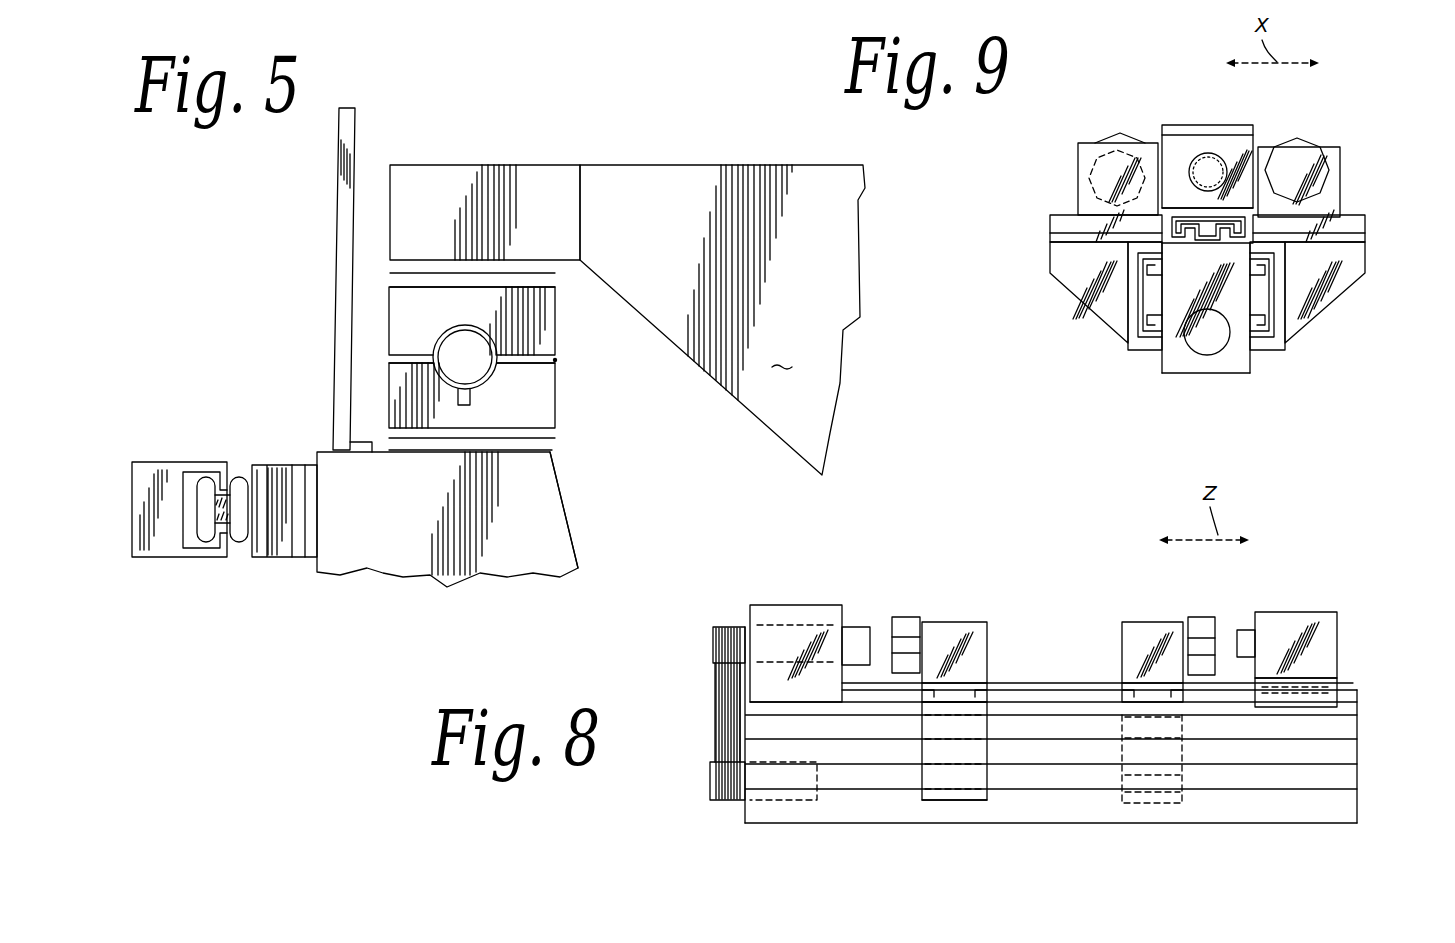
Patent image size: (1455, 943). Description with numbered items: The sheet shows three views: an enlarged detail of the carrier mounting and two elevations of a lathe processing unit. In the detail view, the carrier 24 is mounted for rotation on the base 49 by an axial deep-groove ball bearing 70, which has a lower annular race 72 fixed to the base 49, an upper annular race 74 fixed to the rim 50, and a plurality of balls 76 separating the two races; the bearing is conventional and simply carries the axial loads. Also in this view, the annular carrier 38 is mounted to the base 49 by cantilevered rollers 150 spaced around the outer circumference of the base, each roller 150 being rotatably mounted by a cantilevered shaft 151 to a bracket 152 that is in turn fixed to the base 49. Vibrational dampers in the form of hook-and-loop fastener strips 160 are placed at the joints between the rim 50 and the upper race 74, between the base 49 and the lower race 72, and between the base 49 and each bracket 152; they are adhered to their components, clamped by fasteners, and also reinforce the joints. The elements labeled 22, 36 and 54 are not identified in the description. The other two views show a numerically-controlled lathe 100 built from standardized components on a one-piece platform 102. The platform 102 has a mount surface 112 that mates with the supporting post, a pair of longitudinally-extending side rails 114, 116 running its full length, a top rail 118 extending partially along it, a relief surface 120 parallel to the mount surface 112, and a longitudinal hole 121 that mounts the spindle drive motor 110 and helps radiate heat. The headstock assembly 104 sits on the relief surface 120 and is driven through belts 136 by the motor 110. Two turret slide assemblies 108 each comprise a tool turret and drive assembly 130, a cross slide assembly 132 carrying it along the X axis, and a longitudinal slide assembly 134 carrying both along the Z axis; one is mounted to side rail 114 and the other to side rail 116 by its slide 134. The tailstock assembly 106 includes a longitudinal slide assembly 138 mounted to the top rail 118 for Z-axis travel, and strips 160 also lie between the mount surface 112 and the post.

In FIG. 5, the base frame 22 is at (575, 548).
In FIG. 5, the carrier 24 is at (738, 165).
In FIG. 5, the arm 36 is at (340, 258).
In FIG. 5, the annular carrier 38 is at (160, 556).
In FIG. 5, the base 49 is at (545, 485).
In FIG. 5, the rim 50 is at (517, 190).
In FIG. 5, the surface 54 is at (785, 355).
In FIG. 5, the deep-groove ball bearing 70 is at (557, 361).
In FIG. 5, the lower annular race 72 is at (540, 405).
In FIG. 5, the upper annular race 74 is at (545, 318).
In FIG. 5, the balls 76 is at (455, 352).
In FIG. 9, the numerically-controlled lathe 100 is at (1326, 91).
In FIG. 8, the numerically-controlled lathe 100 is at (1052, 546).
In FIG. 9, the platform 102 is at (1165, 378).
In FIG. 8, the platform 102 is at (1052, 818).
In FIG. 9, the headstock assembly 104 is at (1217, 127).
In FIG. 8, the headstock assembly 104 is at (795, 604).
In FIG. 9, the tailstock assembly 106 is at (1193, 128).
In FIG. 8, the tailstock assembly 106 is at (1290, 610).
In FIG. 8, the turret slide assembly 108 is at (955, 620).
In FIG. 8, the spindle drive motor 110 is at (712, 786).
In FIG. 9, the mount surface 112 is at (1245, 376).
In FIG. 8, the mount surface 112 is at (1233, 826).
In FIG. 9, the side rail 114 is at (1283, 345).
In FIG. 9, the side rail 116 is at (1135, 330).
In FIG. 8, the side rail 116 is at (1365, 738).
In FIG. 9, the top rail 118 is at (1242, 215).
In FIG. 8, the top rail 118 is at (1045, 689).
In FIG. 8, the relief surface 120 is at (780, 700).
In FIG. 9, the hole 121 is at (1207, 355).
In FIG. 9, the tool turret and drive assembly 130 is at (1098, 142).
In FIG. 8, the tool turret and drive assembly 130 is at (905, 624).
In FIG. 9, the cross slide assembly 132 is at (1050, 218).
In FIG. 8, the cross slide assembly 132 is at (975, 682).
In FIG. 9, the longitudinal slide assembly 134 is at (1068, 290).
In FIG. 8, the longitudinal slide assembly 134 is at (987, 802).
In FIG. 8, the belts 136 is at (713, 712).
In FIG. 9, the longitudinal slide assembly 138 is at (1158, 183).
In FIG. 8, the longitudinal slide assembly 138 is at (1323, 673).
In FIG. 5, the cantilevered rollers 150 is at (207, 542).
In FIG. 5, the cantilevered shaft 151 is at (250, 556).
In FIG. 5, the bracket 152 is at (263, 467).
In FIG. 5, the strips 160 is at (527, 280).